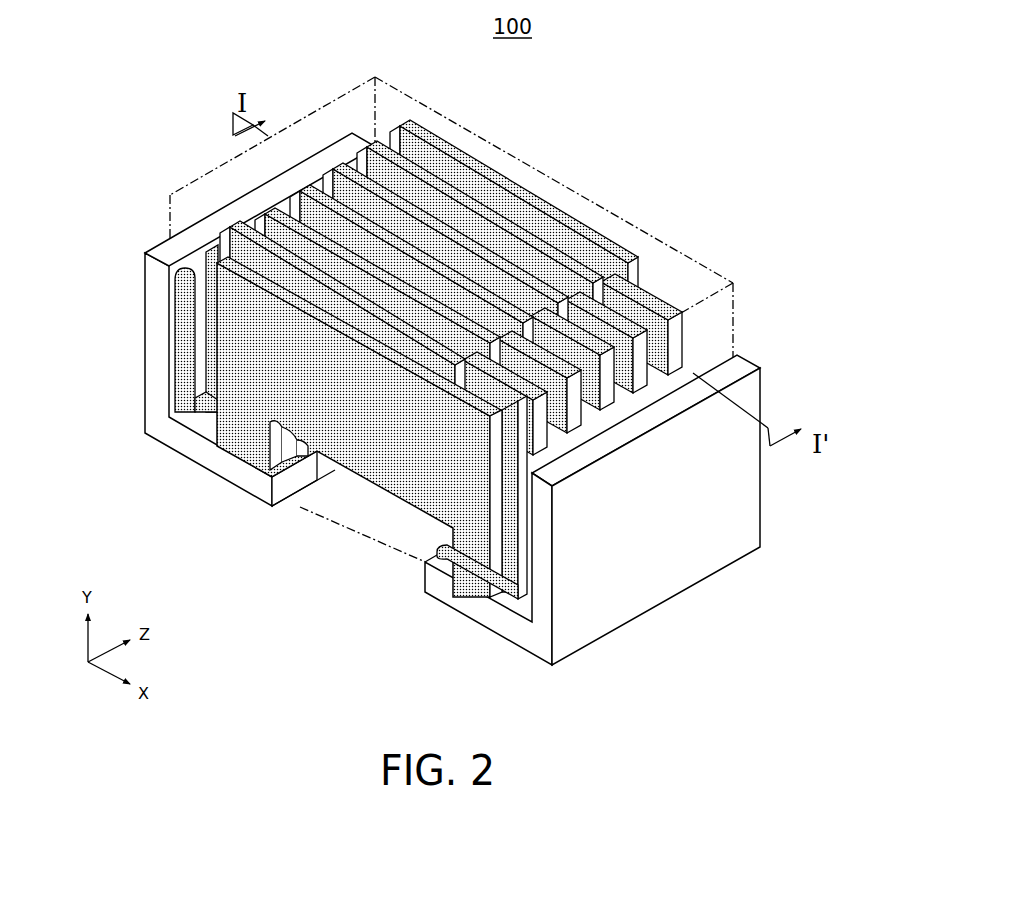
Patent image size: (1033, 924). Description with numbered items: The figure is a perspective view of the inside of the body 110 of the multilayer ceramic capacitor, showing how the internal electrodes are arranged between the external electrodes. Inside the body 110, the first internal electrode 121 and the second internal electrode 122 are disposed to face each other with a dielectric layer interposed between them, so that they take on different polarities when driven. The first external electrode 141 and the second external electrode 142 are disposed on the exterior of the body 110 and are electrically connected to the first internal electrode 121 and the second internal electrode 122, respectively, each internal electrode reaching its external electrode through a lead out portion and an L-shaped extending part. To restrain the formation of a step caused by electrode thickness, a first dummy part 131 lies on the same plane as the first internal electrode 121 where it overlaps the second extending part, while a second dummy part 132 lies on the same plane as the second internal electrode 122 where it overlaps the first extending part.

The body 110 is at (581, 191).
The first internal electrode 121 is at (374, 492).
The second internal electrode 122 is at (622, 247).
The first dummy part 131 is at (470, 578).
The second dummy part 132 is at (197, 255).
The first external electrode 141 is at (205, 458).
The second external electrode 142 is at (472, 612).